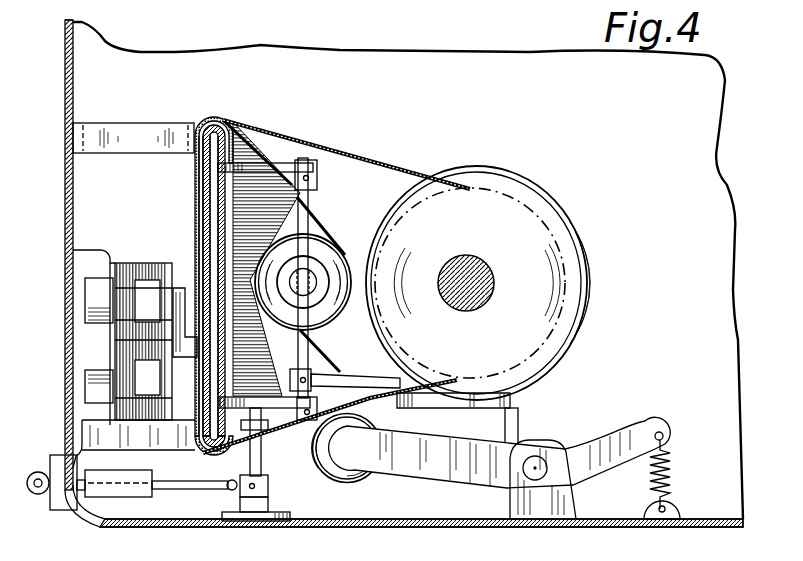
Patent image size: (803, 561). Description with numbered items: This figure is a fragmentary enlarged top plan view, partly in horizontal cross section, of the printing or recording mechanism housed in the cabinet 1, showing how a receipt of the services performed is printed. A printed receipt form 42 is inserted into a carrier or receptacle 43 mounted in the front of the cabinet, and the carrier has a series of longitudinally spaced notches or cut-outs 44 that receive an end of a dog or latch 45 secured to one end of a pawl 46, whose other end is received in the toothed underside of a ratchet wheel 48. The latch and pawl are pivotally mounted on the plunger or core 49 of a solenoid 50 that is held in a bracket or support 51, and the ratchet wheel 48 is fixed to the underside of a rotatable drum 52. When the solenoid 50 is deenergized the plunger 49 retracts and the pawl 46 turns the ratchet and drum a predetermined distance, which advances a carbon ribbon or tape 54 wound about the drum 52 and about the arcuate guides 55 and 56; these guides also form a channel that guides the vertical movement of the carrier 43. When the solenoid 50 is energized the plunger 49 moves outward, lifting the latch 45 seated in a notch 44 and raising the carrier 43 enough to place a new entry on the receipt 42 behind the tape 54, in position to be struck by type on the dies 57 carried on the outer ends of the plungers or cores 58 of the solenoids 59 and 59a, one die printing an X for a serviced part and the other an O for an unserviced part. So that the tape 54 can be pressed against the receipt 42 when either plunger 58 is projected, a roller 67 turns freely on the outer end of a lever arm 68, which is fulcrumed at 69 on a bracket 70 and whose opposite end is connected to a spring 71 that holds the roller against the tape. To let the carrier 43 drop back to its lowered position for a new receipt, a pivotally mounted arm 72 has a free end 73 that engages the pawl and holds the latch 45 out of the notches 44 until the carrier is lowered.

The housing 1 is at (56, 93).
The printed receipt form 42 is at (200, 174).
The carrier or receptacle 43 is at (282, 165).
The notches or cut-outs 44 is at (272, 152).
The dog or latch 45 is at (306, 162).
The pawl 46 is at (349, 378).
The ratchet wheel 48 is at (533, 190).
The plunger or core 49 is at (312, 268).
The solenoid 50 is at (333, 262).
The bracket or support 51 is at (300, 262).
The rotatable drum 52 is at (515, 249).
The carbon ribbon or tape 54 is at (382, 162).
The arcuate guide 55 is at (226, 119).
The arcuate guide 56 is at (204, 456).
The dies 57 is at (185, 288).
The plungers or cores 58 is at (143, 262).
The solenoid 59 is at (128, 301).
The solenoid 59a is at (130, 382).
The roller 67 is at (346, 478).
The lever arm 68 is at (432, 470).
The fulcrum 69 is at (541, 460).
The bracket 70 is at (568, 498).
The spring 71 is at (672, 472).
The arm 72 is at (232, 490).
The free end 73 is at (250, 397).